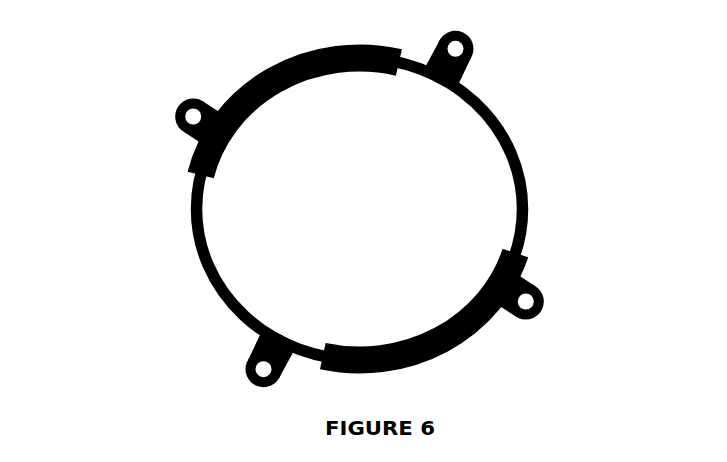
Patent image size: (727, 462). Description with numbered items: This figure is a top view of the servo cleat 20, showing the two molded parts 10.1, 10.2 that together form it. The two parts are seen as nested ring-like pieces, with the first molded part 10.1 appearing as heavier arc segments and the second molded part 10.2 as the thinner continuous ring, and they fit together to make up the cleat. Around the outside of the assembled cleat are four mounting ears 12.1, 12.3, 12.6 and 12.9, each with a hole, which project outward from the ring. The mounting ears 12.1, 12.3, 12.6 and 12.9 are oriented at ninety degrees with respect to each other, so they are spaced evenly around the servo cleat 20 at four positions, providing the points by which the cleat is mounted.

The servo cleat 20 is at (327, 209).
The molded part 10.1 is at (444, 200).
The molded part 10.2 is at (268, 206).
The mounting ear 12.1 is at (456, 49).
The mounting ear 12.3 is at (526, 302).
The mounting ear 12.6 is at (193, 116).
The mounting ear 12.9 is at (264, 369).